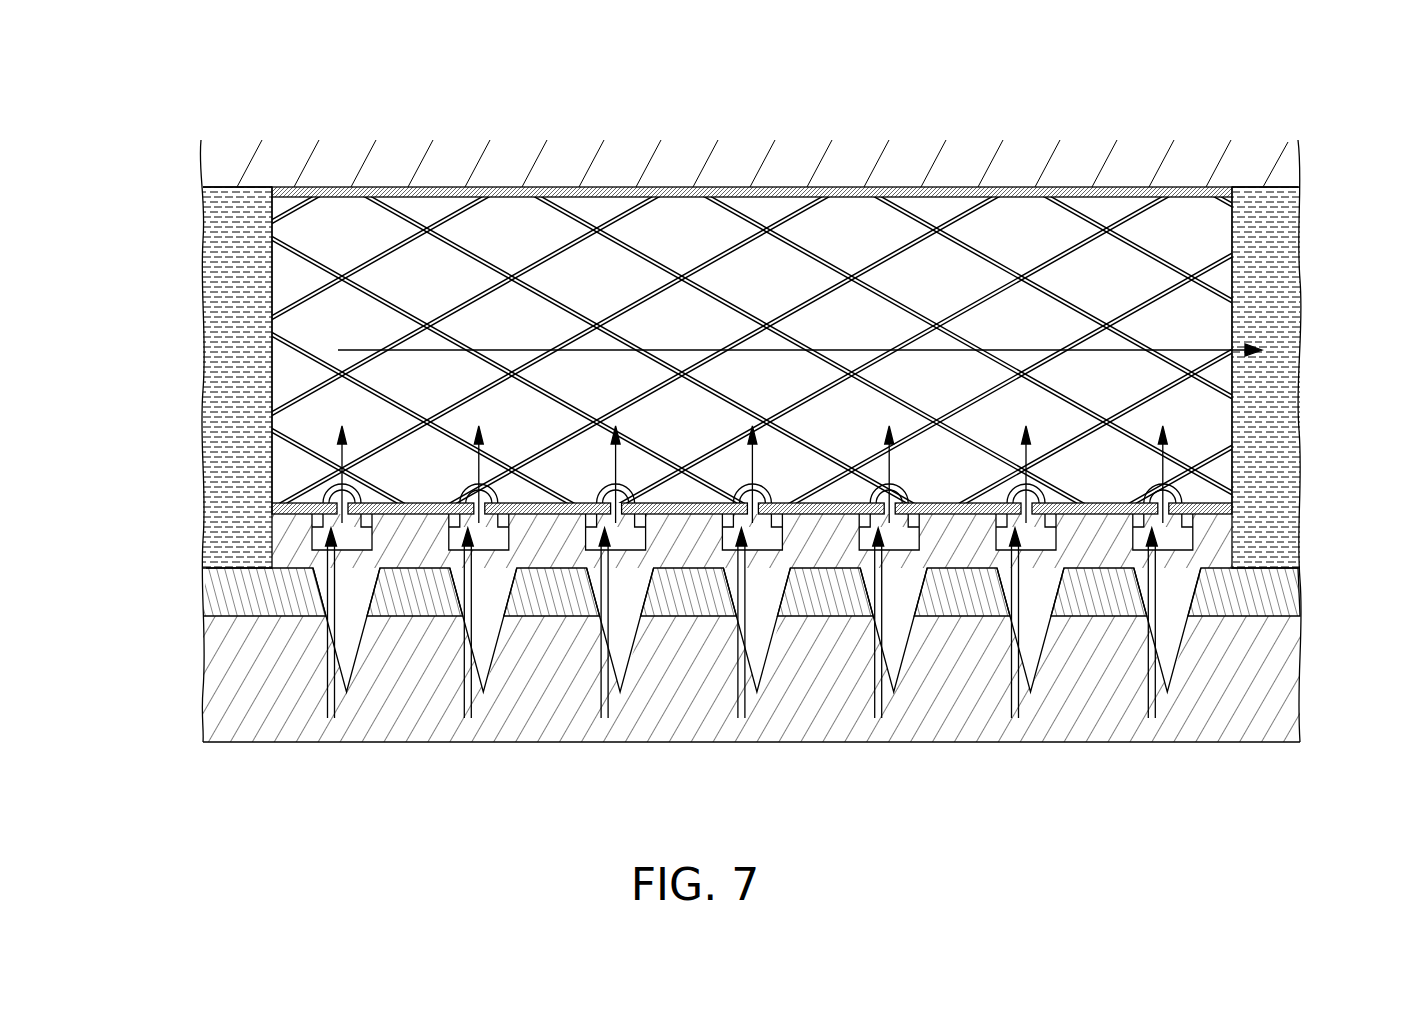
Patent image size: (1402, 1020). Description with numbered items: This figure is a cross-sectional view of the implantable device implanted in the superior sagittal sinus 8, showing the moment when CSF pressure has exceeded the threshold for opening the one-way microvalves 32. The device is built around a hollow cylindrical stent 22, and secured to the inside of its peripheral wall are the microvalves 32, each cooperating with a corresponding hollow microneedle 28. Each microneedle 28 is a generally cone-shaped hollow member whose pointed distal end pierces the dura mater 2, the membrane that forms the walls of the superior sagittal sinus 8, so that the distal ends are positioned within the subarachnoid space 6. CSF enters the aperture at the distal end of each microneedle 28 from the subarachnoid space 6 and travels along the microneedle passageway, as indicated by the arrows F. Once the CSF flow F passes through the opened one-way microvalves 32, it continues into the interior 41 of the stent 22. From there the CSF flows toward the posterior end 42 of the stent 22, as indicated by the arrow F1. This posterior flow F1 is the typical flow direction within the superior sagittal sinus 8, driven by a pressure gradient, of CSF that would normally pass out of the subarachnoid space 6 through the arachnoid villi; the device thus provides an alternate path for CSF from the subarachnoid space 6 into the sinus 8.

The dura mater 2 is at (235, 581).
The subarachnoid space 6 is at (268, 703).
The superior sagittal sinus 8 is at (483, 27).
The stent 22 is at (341, 227).
The microneedle 28 is at (897, 652).
The one-way microvalve 32 is at (845, 503).
The interior of the stent 41 is at (767, 391).
The posterior end of the stent 42 is at (1233, 233).
The CSF flow F is at (342, 447).
The posterior CSF flow F1 is at (1200, 343).